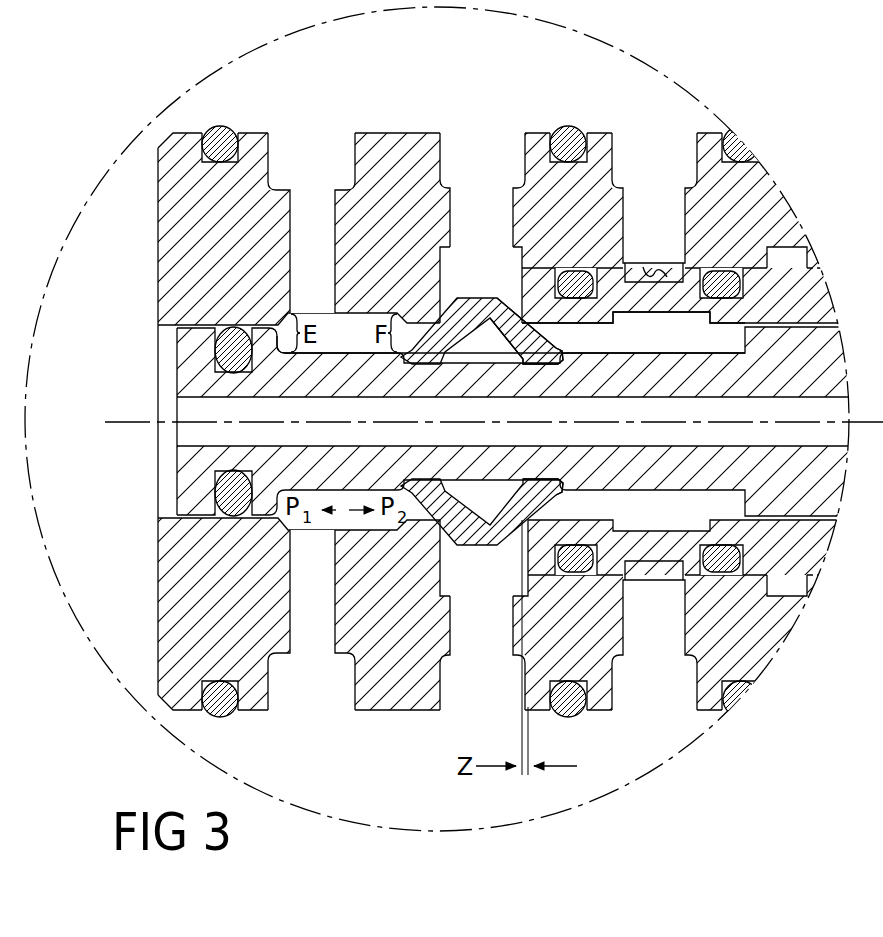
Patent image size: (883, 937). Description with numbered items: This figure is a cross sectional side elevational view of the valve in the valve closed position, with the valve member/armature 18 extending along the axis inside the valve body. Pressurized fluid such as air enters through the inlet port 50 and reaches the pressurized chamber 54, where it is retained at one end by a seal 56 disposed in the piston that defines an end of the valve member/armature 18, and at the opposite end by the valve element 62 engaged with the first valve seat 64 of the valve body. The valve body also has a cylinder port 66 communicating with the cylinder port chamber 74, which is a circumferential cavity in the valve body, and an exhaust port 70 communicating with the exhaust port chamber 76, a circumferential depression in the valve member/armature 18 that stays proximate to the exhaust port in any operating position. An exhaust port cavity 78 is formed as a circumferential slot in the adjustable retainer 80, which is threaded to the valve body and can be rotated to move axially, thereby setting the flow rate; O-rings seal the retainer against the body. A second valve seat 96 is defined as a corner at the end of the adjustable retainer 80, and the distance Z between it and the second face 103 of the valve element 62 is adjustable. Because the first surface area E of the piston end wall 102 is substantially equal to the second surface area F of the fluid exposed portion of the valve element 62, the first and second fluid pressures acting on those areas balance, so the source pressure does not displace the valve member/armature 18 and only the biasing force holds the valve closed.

The valve member/armature 18 is at (220, 462).
The inlet port 50 is at (327, 175).
The pressurized chamber 54 is at (365, 347).
The seal 56 is at (215, 352).
The valve element 62 is at (490, 345).
The first valve seat 64 is at (480, 347).
The cylinder port 66 is at (498, 175).
The exhaust port 70 is at (669, 177).
The cylinder port chamber 74 is at (496, 289).
The exhaust port chamber 76 is at (679, 349).
The exhaust port cavity 78 is at (647, 268).
The adjustable retainer 80 is at (605, 310).
The second valve seat 96 is at (535, 505).
The piston end wall 102 is at (271, 360).
The second face 103 is at (538, 504).